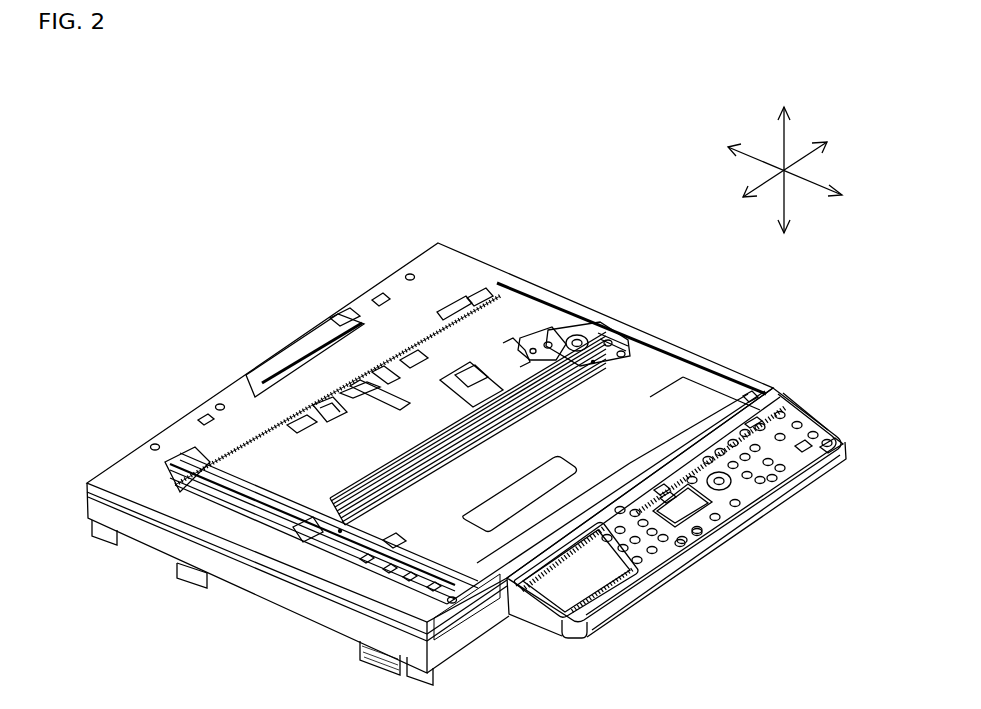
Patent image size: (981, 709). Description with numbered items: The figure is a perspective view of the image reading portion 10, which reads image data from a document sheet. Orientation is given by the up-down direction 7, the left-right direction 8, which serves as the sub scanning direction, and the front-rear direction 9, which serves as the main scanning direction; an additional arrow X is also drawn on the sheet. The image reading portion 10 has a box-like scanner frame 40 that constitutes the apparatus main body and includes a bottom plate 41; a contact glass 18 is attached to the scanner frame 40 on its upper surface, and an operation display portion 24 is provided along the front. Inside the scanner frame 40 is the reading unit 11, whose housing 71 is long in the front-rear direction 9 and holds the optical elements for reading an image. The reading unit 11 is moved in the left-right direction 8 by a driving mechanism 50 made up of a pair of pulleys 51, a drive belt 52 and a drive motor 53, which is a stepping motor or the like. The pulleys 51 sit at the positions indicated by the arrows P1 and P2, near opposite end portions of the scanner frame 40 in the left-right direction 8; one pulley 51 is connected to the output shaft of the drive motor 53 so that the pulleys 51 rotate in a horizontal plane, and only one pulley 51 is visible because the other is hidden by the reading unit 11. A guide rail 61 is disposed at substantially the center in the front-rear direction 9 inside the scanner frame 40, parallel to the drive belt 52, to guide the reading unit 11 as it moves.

The image reading portion 10 is at (604, 174).
The up-down direction 7 is at (783, 140).
The left-right direction 8 is at (765, 181).
The front-rear direction 9 is at (823, 181).
The moving direction X is at (640, 285).
The scanner frame 40 is at (480, 262).
The bottom plate 41 is at (652, 392).
The contact glass 18 is at (718, 377).
The driving mechanism 50 is at (655, 331).
The guide rail 61 is at (612, 337).
The pulleys 51 is at (590, 340).
The drive belt 52 is at (400, 458).
The drive motor 53 is at (540, 343).
The reading unit 11 is at (312, 495).
The housing 71 is at (398, 544).
The position arrow P1 is at (596, 366).
The position arrow P2 is at (340, 531).
The operation display portion 24 is at (703, 553).